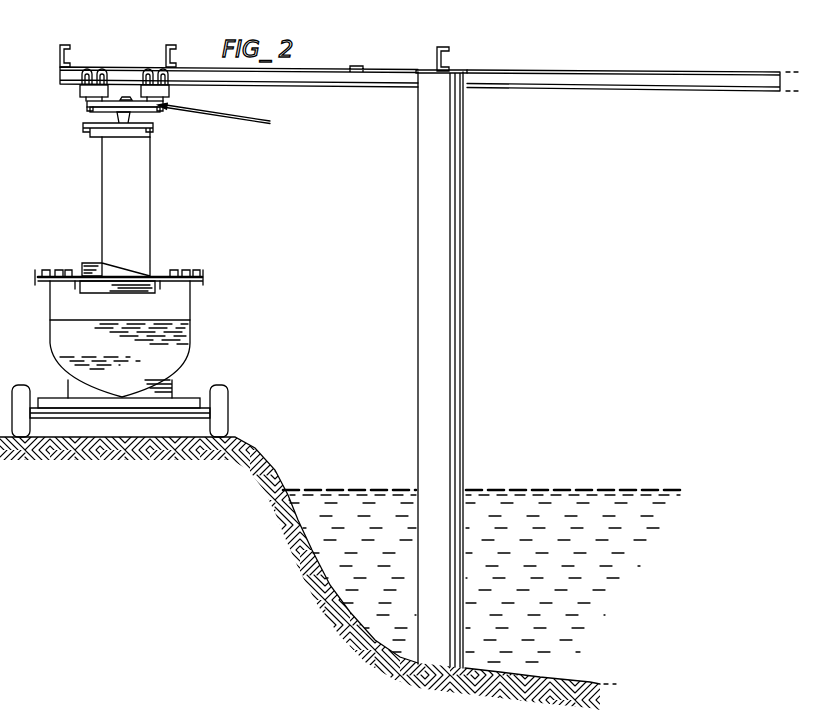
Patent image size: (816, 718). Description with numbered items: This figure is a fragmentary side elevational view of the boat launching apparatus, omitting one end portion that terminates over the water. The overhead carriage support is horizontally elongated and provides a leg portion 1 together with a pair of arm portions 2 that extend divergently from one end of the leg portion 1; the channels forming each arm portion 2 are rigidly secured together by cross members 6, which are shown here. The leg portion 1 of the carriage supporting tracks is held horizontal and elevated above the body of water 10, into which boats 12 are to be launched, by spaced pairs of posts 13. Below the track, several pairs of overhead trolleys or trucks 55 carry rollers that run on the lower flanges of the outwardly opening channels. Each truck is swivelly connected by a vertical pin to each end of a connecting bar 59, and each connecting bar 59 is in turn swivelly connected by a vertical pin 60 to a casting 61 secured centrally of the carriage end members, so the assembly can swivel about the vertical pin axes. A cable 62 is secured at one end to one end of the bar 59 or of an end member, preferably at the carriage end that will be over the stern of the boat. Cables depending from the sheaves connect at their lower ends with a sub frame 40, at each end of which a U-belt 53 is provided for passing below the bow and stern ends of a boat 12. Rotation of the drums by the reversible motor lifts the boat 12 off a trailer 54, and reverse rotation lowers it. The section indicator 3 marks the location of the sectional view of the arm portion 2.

The leg portion 1 is at (634, 92).
The arm portions 2 is at (333, 91).
The section line for FIG. 3 is at (70, 27).
The cross members 6 is at (61, 52).
The body of water 10 is at (510, 490).
The boat 12 is at (172, 333).
The posts 13 is at (460, 258).
The sub frame 40 is at (167, 261).
The U-belt 53 is at (190, 297).
The trailer 54 is at (243, 383).
The overhead trolleys or trucks 55 is at (68, 100).
The connecting bar 59 is at (137, 100).
The vertical pin 60 is at (125, 99).
The casting 61 is at (150, 118).
The cable 62 is at (251, 122).